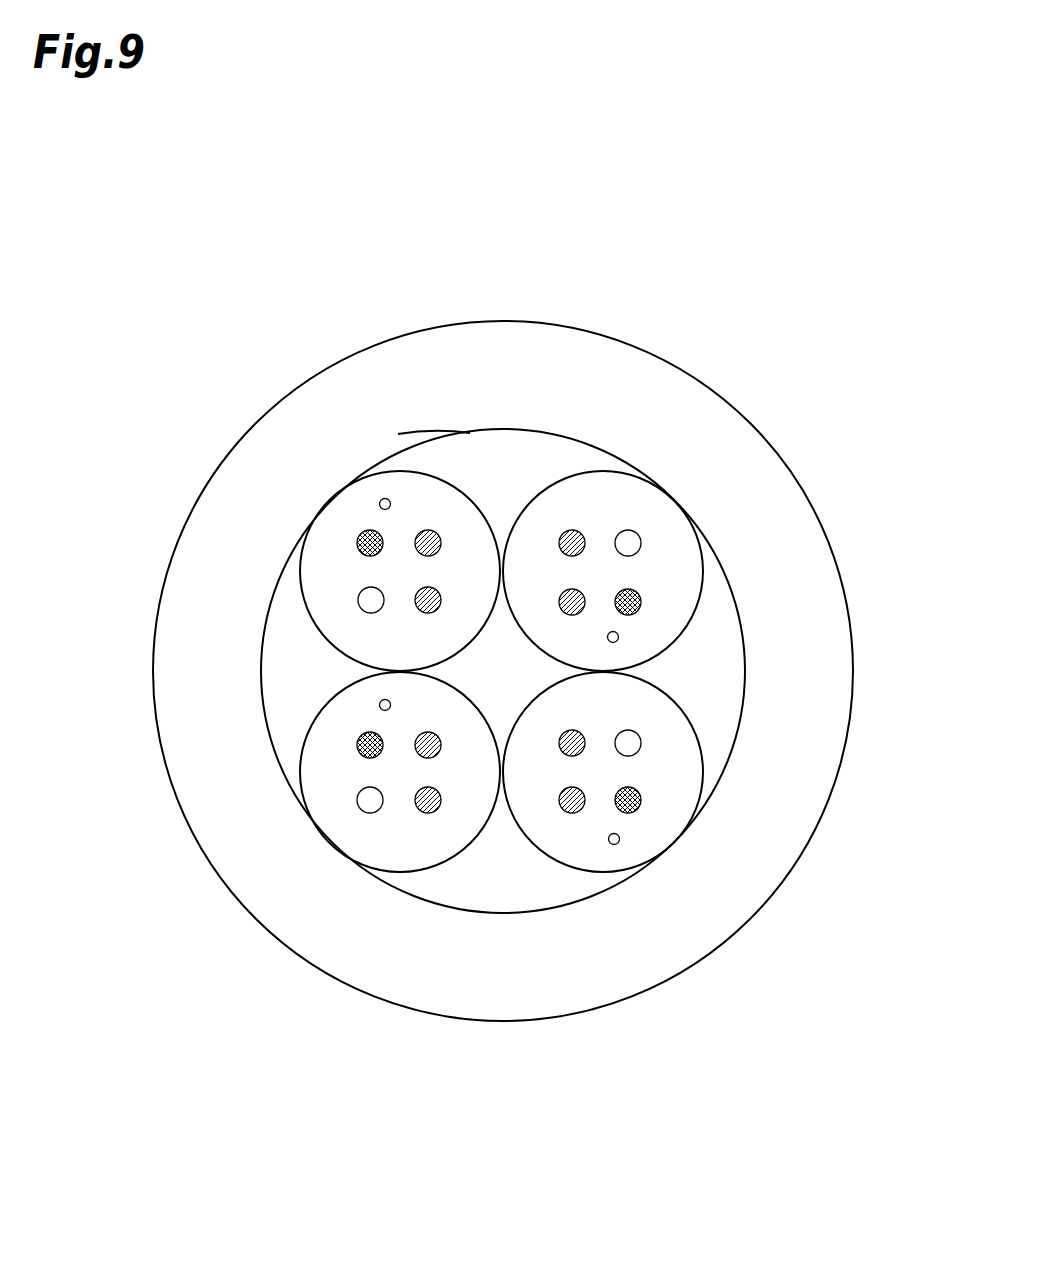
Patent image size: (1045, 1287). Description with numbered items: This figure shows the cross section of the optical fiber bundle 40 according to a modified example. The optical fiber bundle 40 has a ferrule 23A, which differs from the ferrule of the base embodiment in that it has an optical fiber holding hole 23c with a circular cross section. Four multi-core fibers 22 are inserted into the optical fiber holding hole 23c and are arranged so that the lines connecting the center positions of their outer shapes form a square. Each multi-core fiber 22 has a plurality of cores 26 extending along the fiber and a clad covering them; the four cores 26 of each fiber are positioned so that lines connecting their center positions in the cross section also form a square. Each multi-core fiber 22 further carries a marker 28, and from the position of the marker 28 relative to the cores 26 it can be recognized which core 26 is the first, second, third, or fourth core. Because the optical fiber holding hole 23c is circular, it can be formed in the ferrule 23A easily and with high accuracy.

The optical fiber bundle 40 is at (790, 386).
The ferrule 23A is at (510, 346).
The optical fiber holding hole 23c is at (438, 437).
The multi-core fiber 22 is at (696, 1022).
The core 26 is at (409, 1118).
The marker 28 is at (384, 498).